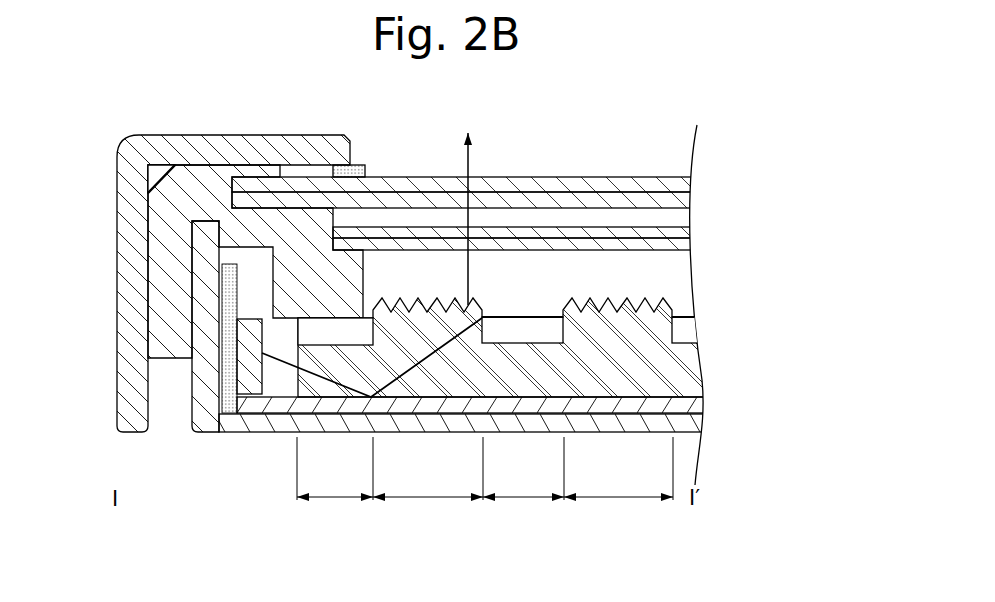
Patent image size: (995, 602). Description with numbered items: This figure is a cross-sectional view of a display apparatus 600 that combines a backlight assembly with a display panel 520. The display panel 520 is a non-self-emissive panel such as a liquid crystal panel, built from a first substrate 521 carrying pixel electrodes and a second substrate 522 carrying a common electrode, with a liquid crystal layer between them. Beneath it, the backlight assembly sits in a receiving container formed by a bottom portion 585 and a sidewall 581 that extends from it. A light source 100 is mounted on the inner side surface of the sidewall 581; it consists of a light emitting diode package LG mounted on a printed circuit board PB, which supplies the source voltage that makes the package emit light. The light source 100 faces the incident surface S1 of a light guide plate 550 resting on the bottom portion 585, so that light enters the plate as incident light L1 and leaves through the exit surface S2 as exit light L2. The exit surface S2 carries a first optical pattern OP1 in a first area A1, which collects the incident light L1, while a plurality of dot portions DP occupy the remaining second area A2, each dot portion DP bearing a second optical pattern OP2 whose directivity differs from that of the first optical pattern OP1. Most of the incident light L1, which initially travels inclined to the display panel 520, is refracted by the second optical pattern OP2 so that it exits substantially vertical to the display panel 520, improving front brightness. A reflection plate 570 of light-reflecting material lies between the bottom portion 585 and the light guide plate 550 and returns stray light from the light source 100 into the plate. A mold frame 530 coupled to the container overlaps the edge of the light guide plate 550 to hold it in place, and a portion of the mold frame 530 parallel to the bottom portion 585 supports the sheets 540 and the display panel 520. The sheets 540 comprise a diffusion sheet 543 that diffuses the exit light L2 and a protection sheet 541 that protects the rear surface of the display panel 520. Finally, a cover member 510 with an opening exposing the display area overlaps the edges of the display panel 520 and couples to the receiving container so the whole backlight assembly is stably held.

The cover member 510 is at (132, 300).
The mold frame 530 is at (168, 240).
The sidewall 581 is at (207, 377).
The bottom portion 585 is at (686, 424).
The reflection plate 570 is at (685, 402).
The light source 100 is at (224, 392).
The printed circuit board PB is at (227, 407).
The light emitting diode package LG is at (250, 385).
The incident surface S1 is at (269, 393).
The exit surface S2 is at (540, 317).
The display panel 520 is at (522, 180).
The second substrate 522 is at (688, 184).
The first substrate 521 is at (683, 200).
The sheets 540 is at (572, 241).
The protection sheet 541 is at (688, 233).
The diffusion sheet 543 is at (686, 245).
The light guide plate 550 is at (555, 335).
The dot portions DP is at (663, 333).
The first optical pattern OP1 is at (512, 326).
The second optical pattern OP2 is at (668, 303).
The incident light L1 is at (325, 380).
The exit light L2 is at (470, 152).
The display apparatus 600 is at (611, 140).
The first area A1 is at (430, 478).
The second area A2 is at (523, 478).